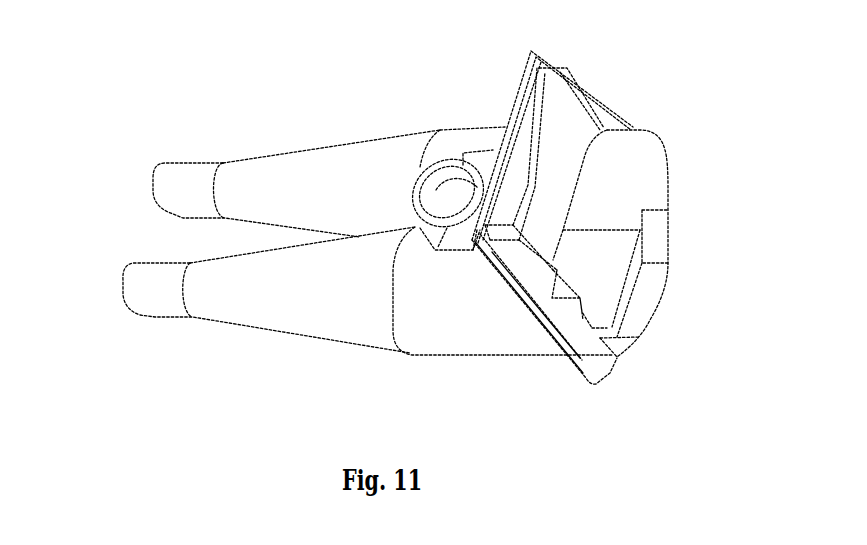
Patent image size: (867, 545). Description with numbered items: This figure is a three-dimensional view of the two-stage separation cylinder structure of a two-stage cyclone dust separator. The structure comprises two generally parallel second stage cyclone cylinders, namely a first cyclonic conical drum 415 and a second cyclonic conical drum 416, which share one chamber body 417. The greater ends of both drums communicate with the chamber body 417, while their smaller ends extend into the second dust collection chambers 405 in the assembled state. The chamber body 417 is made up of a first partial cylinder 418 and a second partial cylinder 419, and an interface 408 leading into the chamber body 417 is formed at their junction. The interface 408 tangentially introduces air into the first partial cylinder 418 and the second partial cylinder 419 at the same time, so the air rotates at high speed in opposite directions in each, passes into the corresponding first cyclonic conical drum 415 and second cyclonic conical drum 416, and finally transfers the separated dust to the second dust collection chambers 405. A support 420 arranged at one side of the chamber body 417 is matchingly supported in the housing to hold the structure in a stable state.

The second dust collection chambers 405 is at (148, 282).
The interface 408 is at (447, 188).
The first cyclonic conical drum 415 is at (290, 187).
The second cyclonic conical drum 416 is at (285, 282).
The chamber body 417 is at (485, 302).
The first partial cylinder 418 is at (477, 140).
The second partial cylinder 419 is at (435, 310).
The support 420 is at (543, 112).